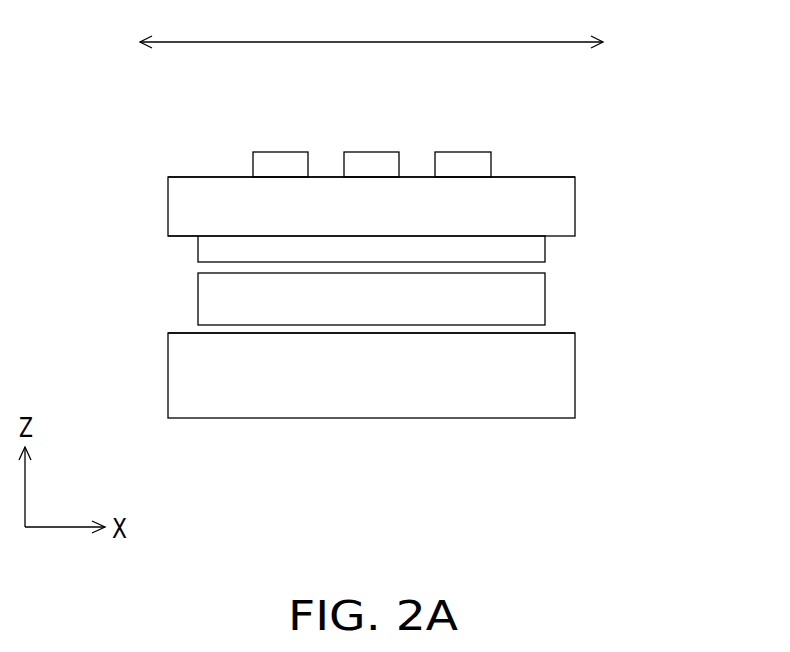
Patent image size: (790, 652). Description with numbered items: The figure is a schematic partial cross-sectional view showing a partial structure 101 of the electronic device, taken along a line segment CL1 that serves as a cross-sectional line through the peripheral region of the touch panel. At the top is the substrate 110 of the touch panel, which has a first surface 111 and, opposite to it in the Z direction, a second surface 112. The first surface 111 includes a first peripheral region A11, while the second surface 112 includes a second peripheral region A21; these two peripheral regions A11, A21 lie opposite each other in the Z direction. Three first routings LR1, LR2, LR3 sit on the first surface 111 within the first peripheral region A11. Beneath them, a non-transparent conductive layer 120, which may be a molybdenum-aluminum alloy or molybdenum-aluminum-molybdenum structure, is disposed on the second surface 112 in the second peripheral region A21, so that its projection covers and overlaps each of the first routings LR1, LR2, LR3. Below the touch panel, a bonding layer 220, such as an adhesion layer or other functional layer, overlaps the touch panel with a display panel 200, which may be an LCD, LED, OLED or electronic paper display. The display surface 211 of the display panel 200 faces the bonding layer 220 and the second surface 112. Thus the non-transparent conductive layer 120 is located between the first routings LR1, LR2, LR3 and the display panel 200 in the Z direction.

The substrate 110 is at (180, 200).
The first surface 111 is at (176, 177).
The second surface 112 is at (190, 236).
The non-transparent conductive layer 120 is at (530, 251).
The bonding layer 220 is at (212, 300).
The display surface 211 is at (195, 333).
The display panel 200 is at (180, 377).
The first routing LR1 is at (281, 164).
The first routing LR2 is at (372, 164).
The first routing LR3 is at (463, 164).
The line segment CL1 is at (371, 26).
The first peripheral region A11 is at (570, 136).
The second peripheral region A21 is at (569, 291).
The partial structure 101 is at (726, 478).